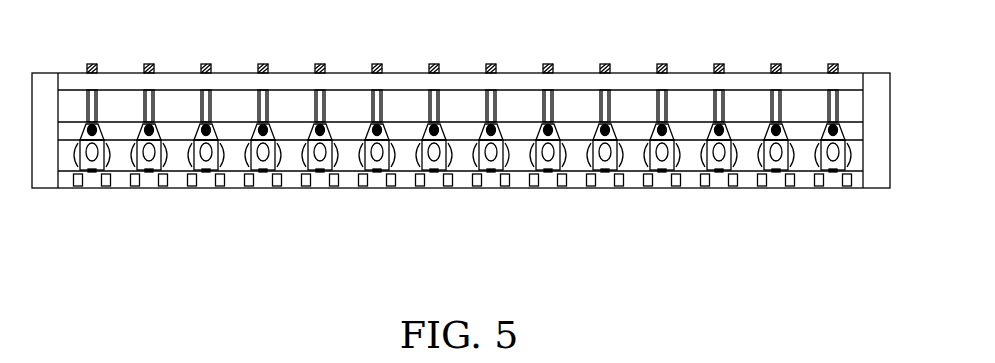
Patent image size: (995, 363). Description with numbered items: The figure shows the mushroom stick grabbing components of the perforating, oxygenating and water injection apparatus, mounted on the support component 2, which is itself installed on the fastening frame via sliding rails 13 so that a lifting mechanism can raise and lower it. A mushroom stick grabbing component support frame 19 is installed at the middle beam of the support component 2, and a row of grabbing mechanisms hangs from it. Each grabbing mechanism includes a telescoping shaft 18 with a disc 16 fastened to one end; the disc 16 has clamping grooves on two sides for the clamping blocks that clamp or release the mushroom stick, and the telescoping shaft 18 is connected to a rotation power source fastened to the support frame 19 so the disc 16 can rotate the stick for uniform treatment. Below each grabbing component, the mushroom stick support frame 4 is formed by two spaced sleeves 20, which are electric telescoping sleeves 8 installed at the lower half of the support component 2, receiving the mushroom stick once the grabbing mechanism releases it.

The support component 2 is at (408, 82).
The mushroom stick support frame 4 is at (748, 180).
The electric telescoping sleeve 8 is at (262, 87).
The sliding rail 13 is at (878, 95).
The disc 16 is at (683, 187).
The telescoping shaft 18 is at (590, 190).
The mushroom stick grabbing component support frame 19 is at (180, 128).
The sleeve 20 is at (418, 182).